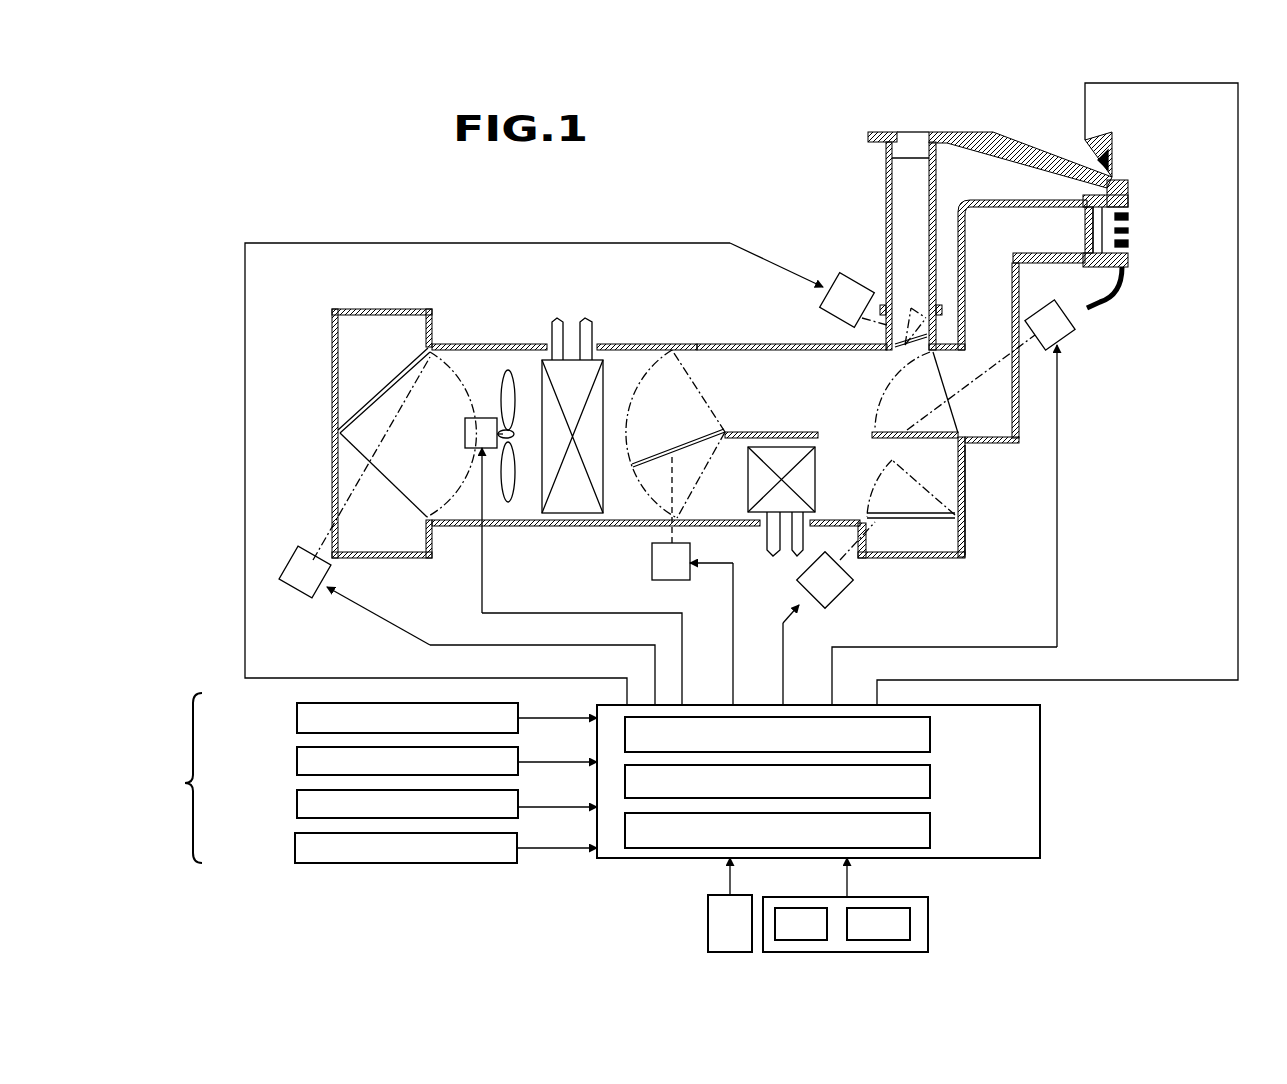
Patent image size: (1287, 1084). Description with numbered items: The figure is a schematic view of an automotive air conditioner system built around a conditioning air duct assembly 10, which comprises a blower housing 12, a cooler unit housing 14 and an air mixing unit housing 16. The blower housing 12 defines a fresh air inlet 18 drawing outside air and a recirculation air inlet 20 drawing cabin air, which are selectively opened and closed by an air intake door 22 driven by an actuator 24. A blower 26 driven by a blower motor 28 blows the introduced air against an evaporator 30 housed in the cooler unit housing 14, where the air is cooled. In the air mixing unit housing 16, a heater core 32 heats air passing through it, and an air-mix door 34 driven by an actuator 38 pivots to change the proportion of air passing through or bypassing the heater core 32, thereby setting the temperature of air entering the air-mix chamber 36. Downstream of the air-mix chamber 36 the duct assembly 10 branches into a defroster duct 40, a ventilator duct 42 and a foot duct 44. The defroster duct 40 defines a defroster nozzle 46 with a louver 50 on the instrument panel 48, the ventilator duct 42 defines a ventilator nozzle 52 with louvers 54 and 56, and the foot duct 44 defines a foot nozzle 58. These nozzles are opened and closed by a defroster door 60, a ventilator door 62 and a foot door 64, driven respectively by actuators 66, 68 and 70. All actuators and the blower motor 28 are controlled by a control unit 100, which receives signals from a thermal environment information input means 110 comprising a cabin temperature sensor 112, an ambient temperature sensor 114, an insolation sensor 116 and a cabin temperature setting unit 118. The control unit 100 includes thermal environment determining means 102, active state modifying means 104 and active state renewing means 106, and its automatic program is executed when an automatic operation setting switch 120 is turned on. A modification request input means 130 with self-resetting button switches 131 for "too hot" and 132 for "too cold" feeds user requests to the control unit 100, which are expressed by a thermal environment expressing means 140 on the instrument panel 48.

The conditioning air duct assembly 10 is at (515, 527).
The blower housing 12 is at (452, 337).
The cooler unit housing 14 is at (607, 338).
The air mixing unit housing 16 is at (720, 340).
The fresh air inlet 18 is at (385, 325).
The recirculation air inlet 20 is at (400, 548).
The air intake door 22 is at (418, 375).
The actuator 24 is at (313, 590).
The blower 26 is at (508, 373).
The blower motor 28 is at (480, 418).
The evaporator 30 is at (572, 508).
The heater core 32 is at (775, 447).
The air-mix door 34 is at (648, 455).
The air-mix chamber 36 is at (830, 437).
The actuator 38 is at (652, 568).
The defroster duct 40 is at (890, 195).
The ventilator duct 42 is at (990, 212).
The foot duct 44 is at (940, 482).
The defroster nozzle 46 is at (908, 132).
The instrument panel 48 is at (1030, 145).
The louver 50 is at (920, 135).
The ventilator nozzle 52 is at (1128, 255).
The louver 54 is at (1105, 222).
The louver 56 is at (1128, 231).
The foot nozzle 58 is at (940, 538).
The defroster door 60 is at (897, 350).
The ventilator door 62 is at (935, 440).
The foot door 64 is at (908, 527).
The actuator 66 is at (845, 285).
The actuator 68 is at (1068, 320).
The actuator 70 is at (840, 597).
The control unit 100 is at (1040, 762).
The thermal environment determining means 102 is at (930, 735).
The active state modifying means 104 is at (930, 784).
The active state renewing means 106 is at (930, 835).
The thermal environment information input means 110 is at (167, 778).
The cabin temperature sensor 112 is at (297, 718).
The ambient temperature sensor 114 is at (297, 762).
The insolation sensor 116 is at (297, 805).
The cabin temperature setting unit 118 is at (295, 848).
The automatic operation setting switch 120 is at (708, 915).
The modification request input means 130 is at (928, 902).
The self-resetting button switch 131 is at (817, 908).
The self-resetting button switch 132 is at (912, 935).
The thermal environment expressing means 140 is at (1118, 142).